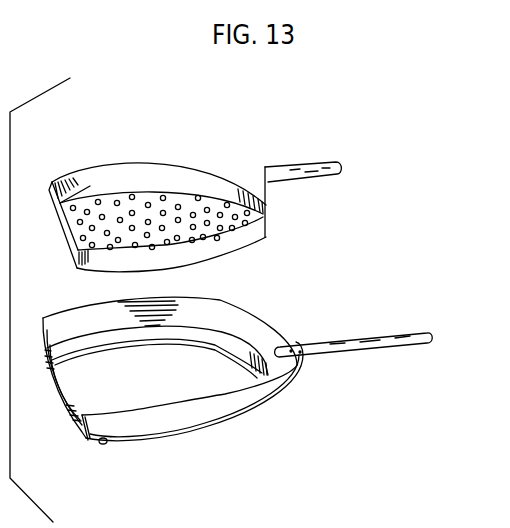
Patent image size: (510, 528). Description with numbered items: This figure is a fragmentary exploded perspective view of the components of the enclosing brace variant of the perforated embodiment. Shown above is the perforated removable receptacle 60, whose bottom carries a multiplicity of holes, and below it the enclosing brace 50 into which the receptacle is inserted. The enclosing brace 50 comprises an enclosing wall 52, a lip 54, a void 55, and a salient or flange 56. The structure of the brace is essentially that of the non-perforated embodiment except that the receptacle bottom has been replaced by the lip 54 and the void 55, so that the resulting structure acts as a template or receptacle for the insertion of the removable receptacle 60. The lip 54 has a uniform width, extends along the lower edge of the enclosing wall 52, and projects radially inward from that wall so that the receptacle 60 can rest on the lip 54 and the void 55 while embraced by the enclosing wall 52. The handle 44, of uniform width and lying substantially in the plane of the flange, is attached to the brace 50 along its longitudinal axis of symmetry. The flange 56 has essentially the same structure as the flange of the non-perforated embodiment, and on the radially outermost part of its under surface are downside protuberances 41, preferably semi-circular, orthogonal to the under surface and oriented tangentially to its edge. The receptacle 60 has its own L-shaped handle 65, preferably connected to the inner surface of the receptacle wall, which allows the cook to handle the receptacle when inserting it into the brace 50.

The downside protuberance 41 is at (110, 447).
The handle 44 is at (377, 340).
The enclosing brace 50 is at (237, 376).
The enclosing wall 52 is at (147, 337).
The lip 54 is at (86, 358).
The void 55 is at (190, 402).
The flange 56 is at (153, 422).
The perforated removable receptacle 60 is at (213, 189).
The handle 65 is at (303, 202).